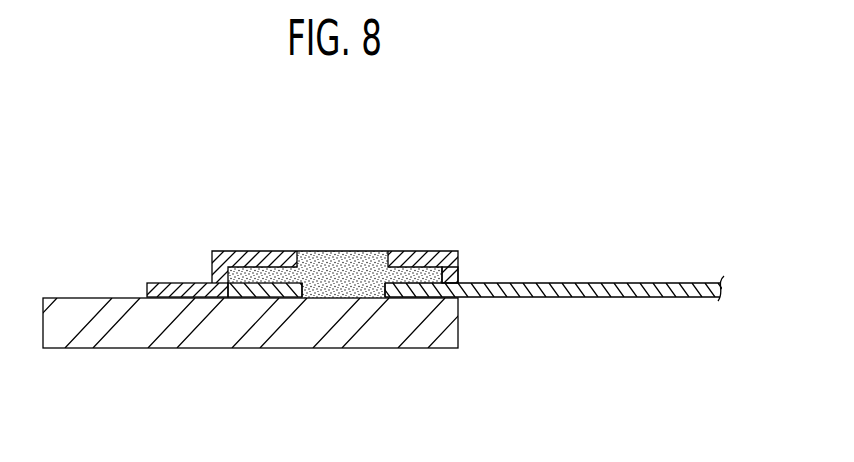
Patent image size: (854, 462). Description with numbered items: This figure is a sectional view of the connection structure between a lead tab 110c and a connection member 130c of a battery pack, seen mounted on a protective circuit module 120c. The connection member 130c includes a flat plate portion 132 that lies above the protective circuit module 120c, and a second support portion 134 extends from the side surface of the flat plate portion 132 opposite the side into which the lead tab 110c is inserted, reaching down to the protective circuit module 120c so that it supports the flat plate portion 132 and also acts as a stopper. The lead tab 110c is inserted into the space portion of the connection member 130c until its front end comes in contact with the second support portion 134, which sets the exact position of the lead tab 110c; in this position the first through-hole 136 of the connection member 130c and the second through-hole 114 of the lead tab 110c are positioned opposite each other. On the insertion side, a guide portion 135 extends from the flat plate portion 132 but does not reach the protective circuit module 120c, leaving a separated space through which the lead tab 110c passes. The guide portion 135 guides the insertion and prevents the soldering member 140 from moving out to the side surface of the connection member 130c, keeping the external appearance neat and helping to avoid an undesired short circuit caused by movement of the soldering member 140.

The lead tab 110c is at (572, 265).
The second through-hole 114 is at (323, 293).
The protective circuit module 120c is at (178, 338).
The connection member 130c is at (316, 280).
The flat plate portion 132 is at (413, 262).
The second support portion 134 is at (211, 268).
The guide portion 135 is at (459, 273).
The first through-hole 136 is at (310, 265).
The soldering member 140 is at (353, 270).